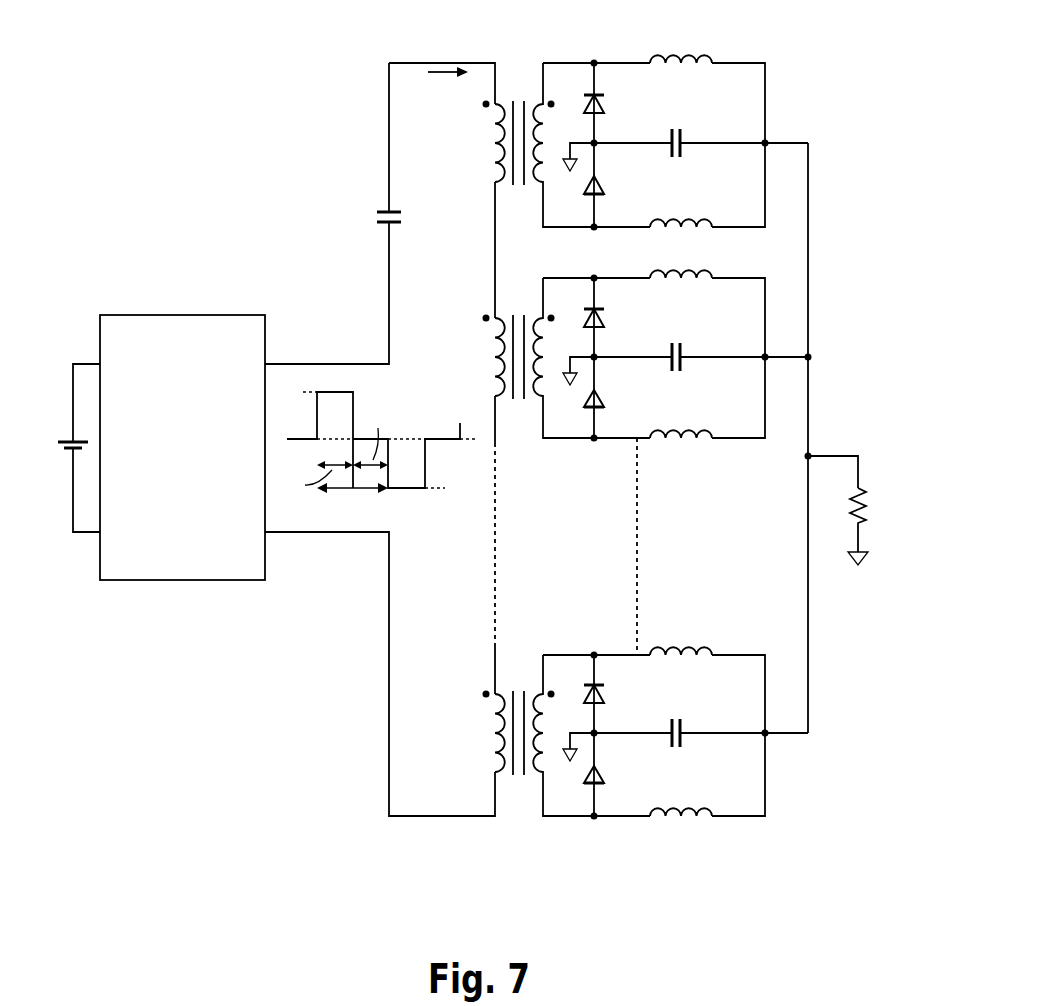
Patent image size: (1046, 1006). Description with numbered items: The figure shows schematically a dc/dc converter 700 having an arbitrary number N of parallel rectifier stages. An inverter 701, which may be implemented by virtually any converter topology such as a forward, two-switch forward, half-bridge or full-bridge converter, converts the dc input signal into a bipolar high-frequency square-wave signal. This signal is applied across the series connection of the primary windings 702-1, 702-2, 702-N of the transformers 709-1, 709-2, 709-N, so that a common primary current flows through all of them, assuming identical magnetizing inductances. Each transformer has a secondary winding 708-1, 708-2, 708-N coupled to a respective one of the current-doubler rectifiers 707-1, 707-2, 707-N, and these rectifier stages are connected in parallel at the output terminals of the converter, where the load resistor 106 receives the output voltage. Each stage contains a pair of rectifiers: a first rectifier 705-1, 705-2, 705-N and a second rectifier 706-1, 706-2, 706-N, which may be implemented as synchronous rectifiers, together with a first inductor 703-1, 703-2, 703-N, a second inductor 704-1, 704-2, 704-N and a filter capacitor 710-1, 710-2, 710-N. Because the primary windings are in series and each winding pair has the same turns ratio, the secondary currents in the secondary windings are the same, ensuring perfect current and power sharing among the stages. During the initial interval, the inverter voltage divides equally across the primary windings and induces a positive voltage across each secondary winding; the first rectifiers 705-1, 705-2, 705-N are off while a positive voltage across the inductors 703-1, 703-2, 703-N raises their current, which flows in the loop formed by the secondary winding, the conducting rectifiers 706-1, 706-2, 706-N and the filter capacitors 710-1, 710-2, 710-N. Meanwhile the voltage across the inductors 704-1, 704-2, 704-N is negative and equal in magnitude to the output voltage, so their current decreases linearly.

The dc/dc converter 700 is at (228, 82).
The inverter 701 is at (192, 314).
The primary winding 702-1 is at (498, 163).
The primary winding 702-2 is at (500, 332).
The primary winding 702-N is at (498, 708).
The inductor 703-1 is at (712, 58).
The inductor 703-2 is at (712, 276).
The inductor 703-N is at (712, 653).
The inductor 704-1 is at (712, 222).
The inductor 704-2 is at (712, 437).
The inductor 704-N is at (720, 799).
The rectifier 705-1 is at (602, 99).
The rectifier 705-2 is at (602, 309).
The rectifier 705-N is at (602, 686).
The rectifier 706-1 is at (602, 194).
The rectifier 706-2 is at (602, 408).
The rectifier 706-N is at (602, 784).
The current-doubler rectifier 707-1 is at (808, 108).
The current-doubler rectifier 707-2 is at (828, 311).
The current-doubler rectifier 707-N is at (858, 682).
The secondary winding 708-1 is at (543, 100).
The secondary winding 708-2 is at (543, 318).
The secondary winding 708-N is at (543, 694).
The transformer 709-1 is at (522, 58).
The transformer 709-2 is at (522, 440).
The transformer 709-N is at (520, 818).
The filter capacitor 710-1 is at (683, 135).
The filter capacitor 710-2 is at (684, 365).
The filter capacitor 710-N is at (700, 715).
The load resistor RL 106 is at (865, 500).